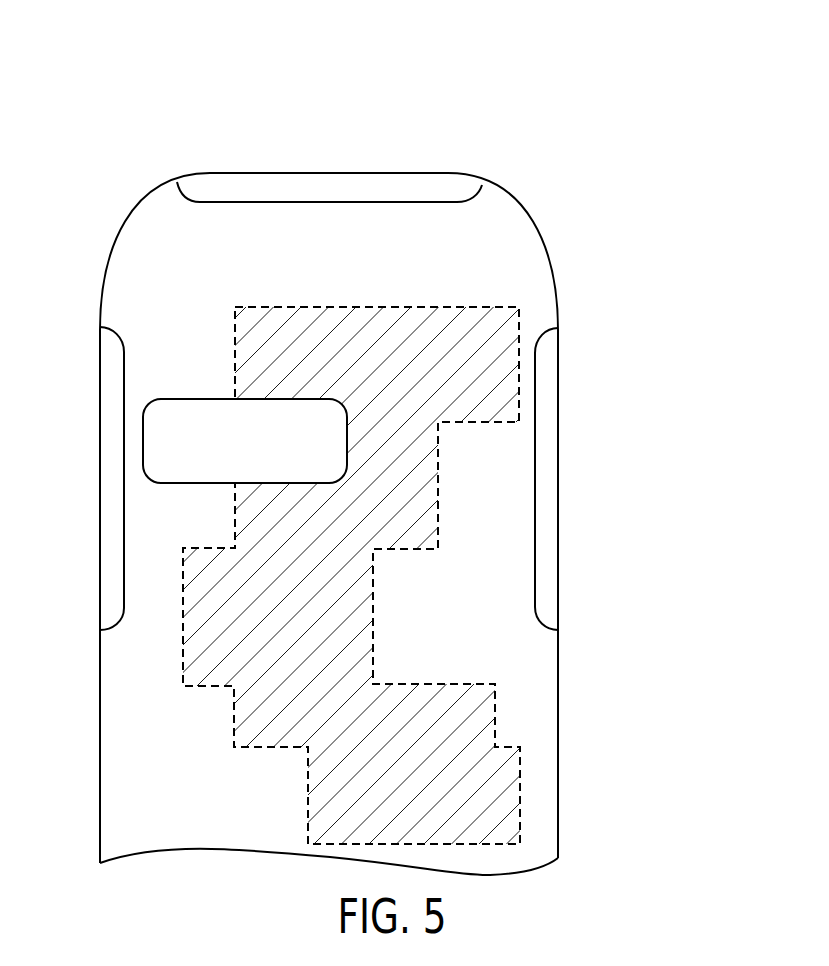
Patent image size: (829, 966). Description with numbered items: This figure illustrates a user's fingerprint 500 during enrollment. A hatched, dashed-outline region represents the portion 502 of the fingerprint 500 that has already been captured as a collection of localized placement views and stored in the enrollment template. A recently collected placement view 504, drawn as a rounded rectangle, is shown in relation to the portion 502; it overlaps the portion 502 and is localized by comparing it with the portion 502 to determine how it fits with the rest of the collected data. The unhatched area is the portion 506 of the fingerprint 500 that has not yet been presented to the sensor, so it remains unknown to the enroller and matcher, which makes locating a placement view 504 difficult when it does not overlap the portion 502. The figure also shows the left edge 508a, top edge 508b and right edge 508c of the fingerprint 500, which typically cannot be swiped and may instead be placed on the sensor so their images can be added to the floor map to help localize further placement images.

The user's fingerprint 500 is at (676, 99).
The portion of the user's fingerprint 502 is at (470, 312).
The placement view 504 is at (196, 398).
The portion of the user's fingerprint 506 is at (462, 603).
The left edge 508a is at (112, 392).
The top edge 508b is at (380, 188).
The right edge 508c is at (547, 460).